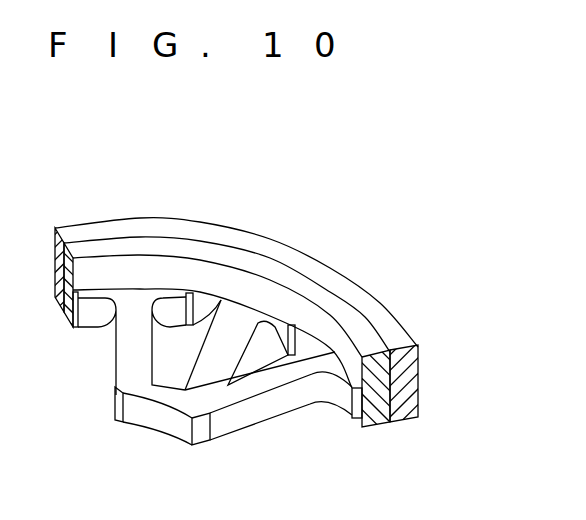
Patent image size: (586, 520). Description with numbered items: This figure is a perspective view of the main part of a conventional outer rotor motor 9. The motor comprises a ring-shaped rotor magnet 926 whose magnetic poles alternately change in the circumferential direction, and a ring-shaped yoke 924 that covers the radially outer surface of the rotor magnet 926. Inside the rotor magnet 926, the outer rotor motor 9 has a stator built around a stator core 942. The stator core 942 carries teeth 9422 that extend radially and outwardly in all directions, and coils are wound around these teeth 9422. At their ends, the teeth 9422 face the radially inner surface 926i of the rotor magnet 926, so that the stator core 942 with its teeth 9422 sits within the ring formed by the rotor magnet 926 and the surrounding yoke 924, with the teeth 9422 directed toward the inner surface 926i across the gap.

The outer rotor motor 9 is at (282, 305).
The yoke 924 is at (394, 338).
The rotor magnet 926 is at (274, 300).
The radially inner surface 926i is at (272, 295).
The stator core 942 is at (217, 400).
The teeth 9422 is at (243, 413).